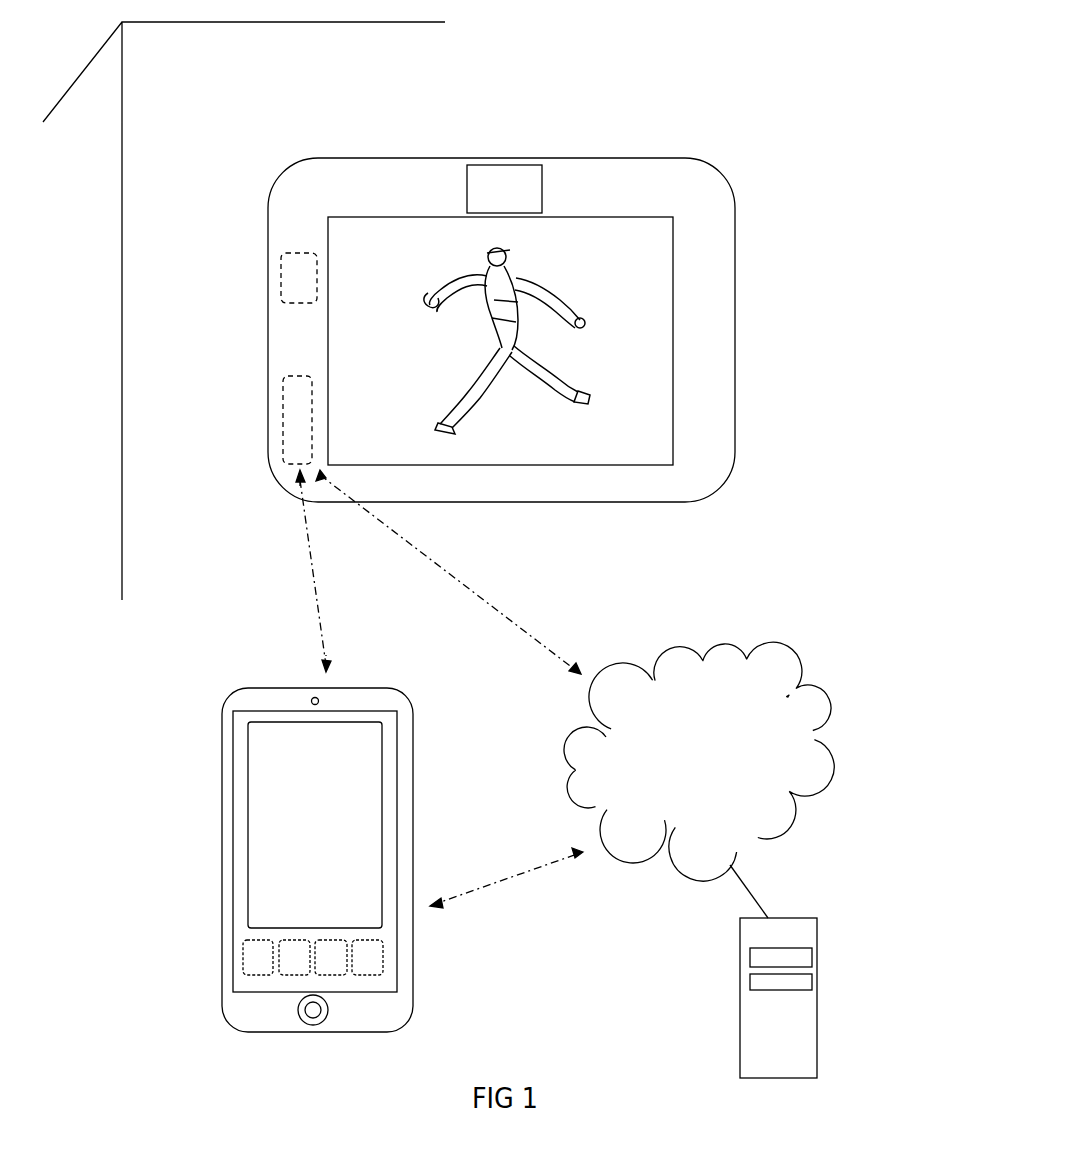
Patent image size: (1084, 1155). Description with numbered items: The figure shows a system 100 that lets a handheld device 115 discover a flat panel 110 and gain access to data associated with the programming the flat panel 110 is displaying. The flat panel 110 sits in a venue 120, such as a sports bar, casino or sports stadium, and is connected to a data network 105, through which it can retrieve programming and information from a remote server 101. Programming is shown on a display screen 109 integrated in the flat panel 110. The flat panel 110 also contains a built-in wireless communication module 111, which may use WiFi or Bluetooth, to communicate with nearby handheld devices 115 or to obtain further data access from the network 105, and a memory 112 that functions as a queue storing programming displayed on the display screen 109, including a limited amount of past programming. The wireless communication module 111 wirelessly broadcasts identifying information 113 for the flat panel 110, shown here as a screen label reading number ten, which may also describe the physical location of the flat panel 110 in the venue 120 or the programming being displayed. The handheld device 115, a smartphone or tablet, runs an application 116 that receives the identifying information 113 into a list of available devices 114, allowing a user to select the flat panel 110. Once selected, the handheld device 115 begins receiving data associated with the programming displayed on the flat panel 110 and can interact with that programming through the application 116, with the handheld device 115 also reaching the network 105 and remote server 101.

The system 100 is at (666, 88).
The remote server 101 is at (806, 930).
The data network 105 is at (699, 761).
The display screen 109 is at (500, 341).
The flat panel 110 is at (723, 220).
The wireless communication module 111 is at (286, 394).
The memory 112 is at (282, 275).
The identifying information 113 is at (531, 170).
The list of available devices 114 is at (373, 810).
The handheld device 115 is at (260, 697).
The application 116 is at (246, 957).
The venue 120 is at (122, 160).